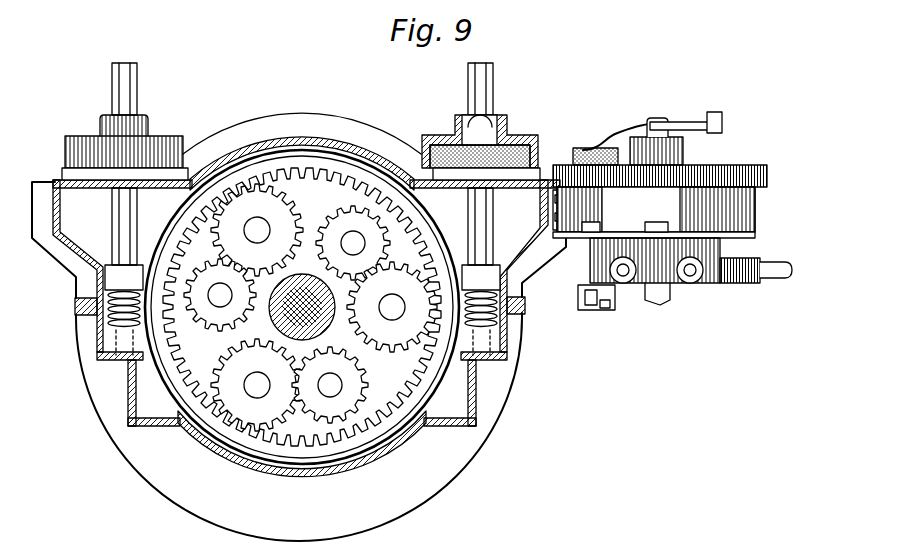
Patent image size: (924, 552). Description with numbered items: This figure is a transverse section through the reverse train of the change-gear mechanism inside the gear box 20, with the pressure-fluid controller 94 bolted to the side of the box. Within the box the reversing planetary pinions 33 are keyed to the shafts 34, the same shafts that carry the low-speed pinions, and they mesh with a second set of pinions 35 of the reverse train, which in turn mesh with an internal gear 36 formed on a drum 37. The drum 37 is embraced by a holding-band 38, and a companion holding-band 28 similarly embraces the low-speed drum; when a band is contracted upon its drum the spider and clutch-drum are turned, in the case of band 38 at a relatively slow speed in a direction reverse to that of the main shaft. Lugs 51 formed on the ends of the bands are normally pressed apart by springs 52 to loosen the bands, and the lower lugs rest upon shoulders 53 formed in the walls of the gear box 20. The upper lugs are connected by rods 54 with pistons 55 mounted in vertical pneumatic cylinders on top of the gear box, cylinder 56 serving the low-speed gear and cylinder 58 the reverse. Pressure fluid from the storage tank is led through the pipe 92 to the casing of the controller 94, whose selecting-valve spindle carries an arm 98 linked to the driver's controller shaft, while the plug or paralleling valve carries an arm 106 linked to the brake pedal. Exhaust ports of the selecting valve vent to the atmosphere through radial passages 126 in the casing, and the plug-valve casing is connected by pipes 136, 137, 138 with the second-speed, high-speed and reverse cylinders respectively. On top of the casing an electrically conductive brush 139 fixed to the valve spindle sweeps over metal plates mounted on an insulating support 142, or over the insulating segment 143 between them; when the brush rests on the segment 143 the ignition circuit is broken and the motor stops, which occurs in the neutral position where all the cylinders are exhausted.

The gear box 20 is at (478, 417).
The holding-band 28 is at (157, 388).
The reversing planetary pinions 33 is at (346, 233).
The shafts 34 is at (351, 236).
The second set of pinions 35 is at (398, 332).
The internal gear 36 is at (397, 412).
The drum 37 is at (328, 445).
The holding-band 38 is at (258, 176).
The lugs 51 is at (105, 275).
The springs 52 is at (92, 305).
The shoulders 53 is at (120, 362).
The rods 54 is at (118, 222).
The pistons 55 is at (513, 155).
The cylinder 56 is at (82, 138).
The cylinder 58 is at (440, 135).
The pipe 92 is at (668, 302).
The controller 94 is at (752, 170).
The arm 98 is at (690, 124).
The arm 106 is at (606, 308).
The radial passages 126 is at (598, 225).
The pipe 136 is at (778, 262).
The pipe 137 is at (695, 284).
The pipe 138 is at (610, 268).
The brush 139 is at (615, 134).
The insulating support 142 is at (570, 165).
The insulating segment 143 is at (580, 148).